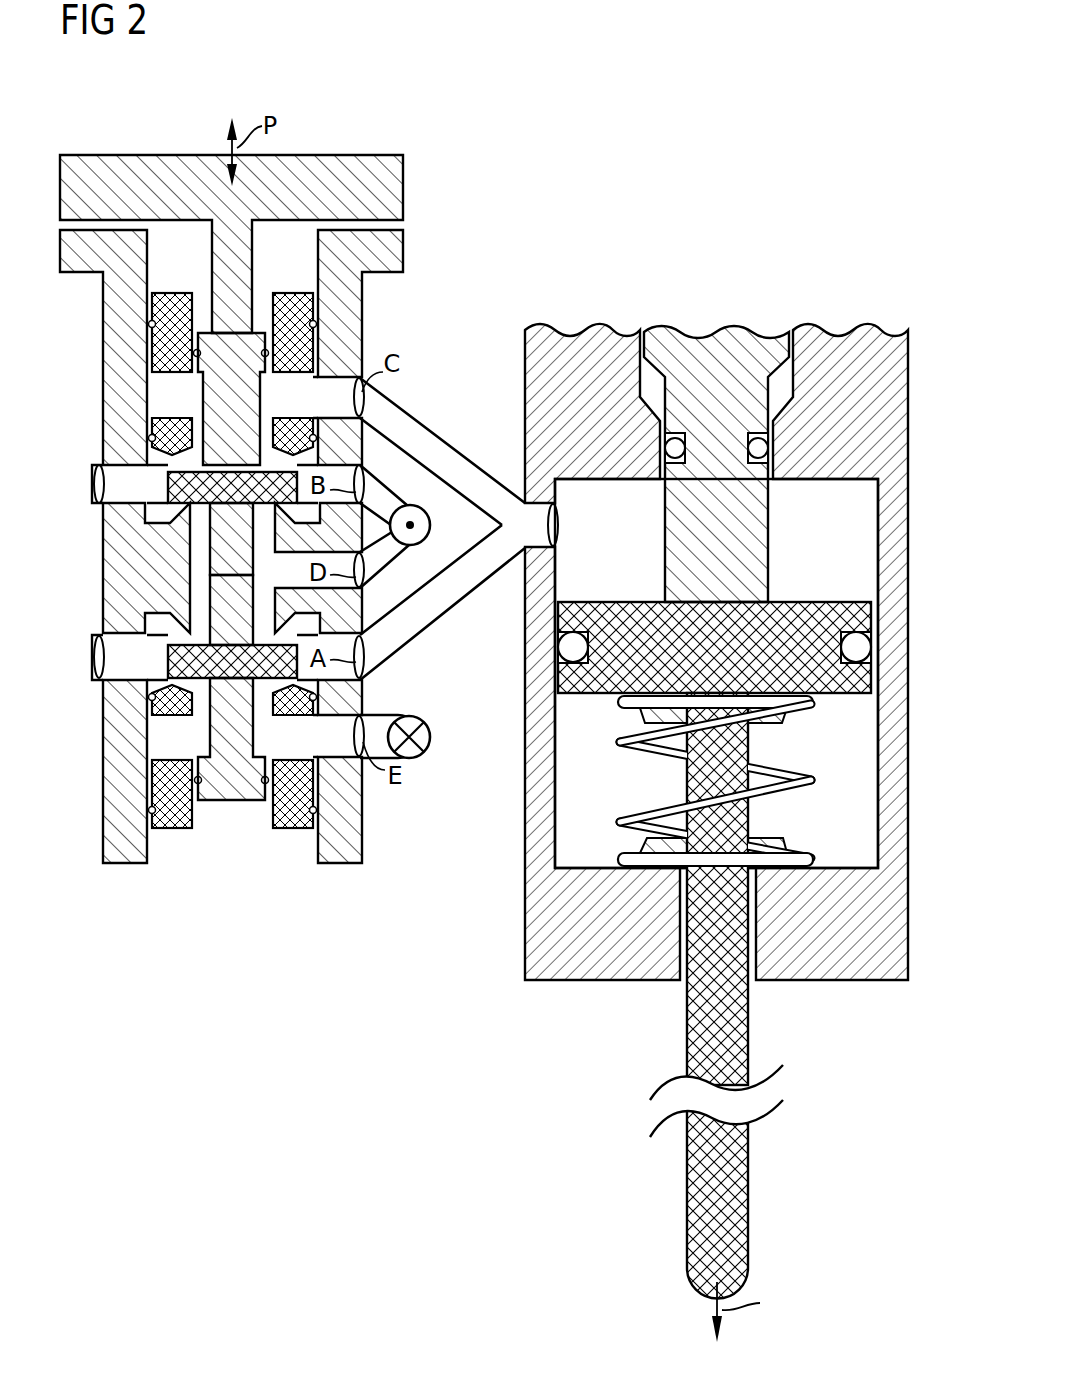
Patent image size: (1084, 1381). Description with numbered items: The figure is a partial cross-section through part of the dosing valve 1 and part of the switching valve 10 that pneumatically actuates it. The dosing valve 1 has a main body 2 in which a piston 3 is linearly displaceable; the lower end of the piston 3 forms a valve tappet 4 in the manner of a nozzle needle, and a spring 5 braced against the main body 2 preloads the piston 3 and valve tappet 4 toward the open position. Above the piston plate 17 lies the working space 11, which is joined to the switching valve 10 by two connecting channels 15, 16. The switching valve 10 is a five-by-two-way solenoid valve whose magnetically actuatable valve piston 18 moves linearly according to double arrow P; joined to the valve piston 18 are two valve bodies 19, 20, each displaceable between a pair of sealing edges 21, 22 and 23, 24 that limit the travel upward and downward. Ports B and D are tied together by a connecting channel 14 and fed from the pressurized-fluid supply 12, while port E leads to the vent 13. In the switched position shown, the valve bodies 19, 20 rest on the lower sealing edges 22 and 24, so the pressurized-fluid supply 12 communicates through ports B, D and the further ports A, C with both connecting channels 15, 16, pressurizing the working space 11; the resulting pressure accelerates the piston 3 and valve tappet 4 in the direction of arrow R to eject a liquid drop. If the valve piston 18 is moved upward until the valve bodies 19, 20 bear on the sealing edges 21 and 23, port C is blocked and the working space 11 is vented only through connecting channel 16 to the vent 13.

The dosing valve 1 is at (737, 777).
The main body 2 is at (868, 334).
The piston 3 is at (748, 1036).
The valve tappet 4 is at (748, 1190).
The spring 5 is at (804, 782).
The switching valve 10 is at (138, 135).
The working space 11 is at (866, 513).
The pressurized-fluid supply 12 is at (414, 525).
The vent 13 is at (430, 737).
The connecting channel 14 is at (372, 486).
The connecting channel 15 is at (472, 478).
The connecting channel 16 is at (470, 575).
The piston plate 17 is at (796, 602).
The valve piston 18 is at (252, 262).
The valve body 19 is at (168, 488).
The valve body 20 is at (168, 661).
The sealing edge 21 is at (198, 463).
The sealing edge 22 is at (199, 505).
The sealing edge 23 is at (199, 642).
The sealing edge 24 is at (199, 682).